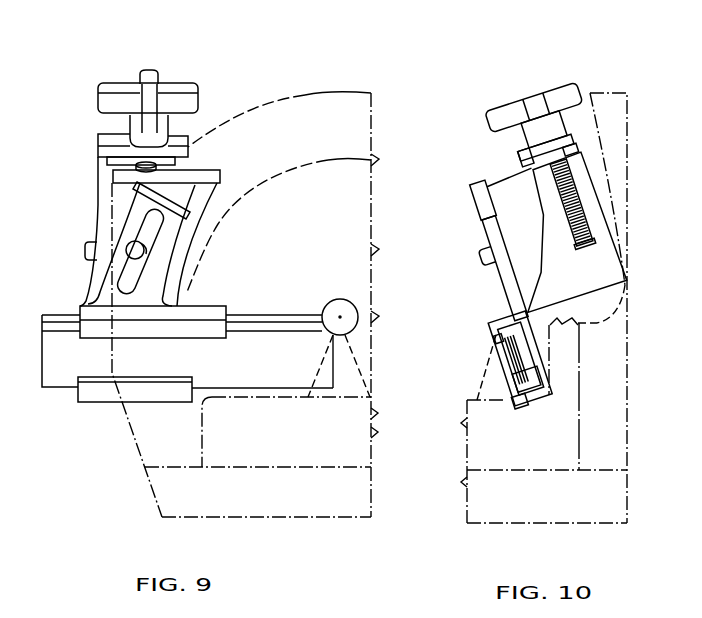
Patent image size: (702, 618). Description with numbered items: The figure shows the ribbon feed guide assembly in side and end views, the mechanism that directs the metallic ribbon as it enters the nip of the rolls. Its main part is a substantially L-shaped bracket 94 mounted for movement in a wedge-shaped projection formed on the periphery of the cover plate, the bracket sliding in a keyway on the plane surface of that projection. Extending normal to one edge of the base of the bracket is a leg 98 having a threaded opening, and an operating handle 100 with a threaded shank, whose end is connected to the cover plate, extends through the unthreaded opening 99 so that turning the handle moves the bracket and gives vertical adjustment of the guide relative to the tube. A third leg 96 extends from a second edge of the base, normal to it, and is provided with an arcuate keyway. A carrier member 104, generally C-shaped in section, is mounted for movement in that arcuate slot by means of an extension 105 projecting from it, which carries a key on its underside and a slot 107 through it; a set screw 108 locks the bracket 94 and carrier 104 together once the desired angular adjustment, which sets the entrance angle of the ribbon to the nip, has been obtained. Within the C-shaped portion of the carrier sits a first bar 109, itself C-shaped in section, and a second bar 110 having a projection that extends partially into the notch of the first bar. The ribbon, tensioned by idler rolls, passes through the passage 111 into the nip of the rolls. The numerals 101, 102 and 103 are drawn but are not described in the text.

In FIG. 9, the L-shaped bracket 94 is at (97, 172).
In FIG. 9, the third leg 96 is at (105, 215).
In FIG. 9, the leg 98 is at (111, 139).
In FIG. 10, the leg 98 is at (574, 143).
In FIG. 9, the unthreaded opening 99 is at (178, 163).
In FIG. 10, the unthreaded opening 99 is at (532, 150).
In FIG. 9, the operating handle 100 is at (190, 105).
In FIG. 10, the operating handle 100 is at (585, 90).
In FIG. 10, the threaded rod 101 is at (589, 243).
In FIG. 10, the nut 102 is at (566, 160).
In FIG. 9, the knob 103 is at (150, 76).
In FIG. 9, the carrier member 104 is at (193, 311).
In FIG. 9, the extension 105 is at (160, 188).
In FIG. 9, the slot 107 is at (124, 283).
In FIG. 9, the set screw 108 is at (130, 249).
In FIG. 10, the first bar 109 is at (512, 356).
In FIG. 10, the second bar 110 is at (510, 358).
In FIG. 10, the passage 111 is at (530, 365).